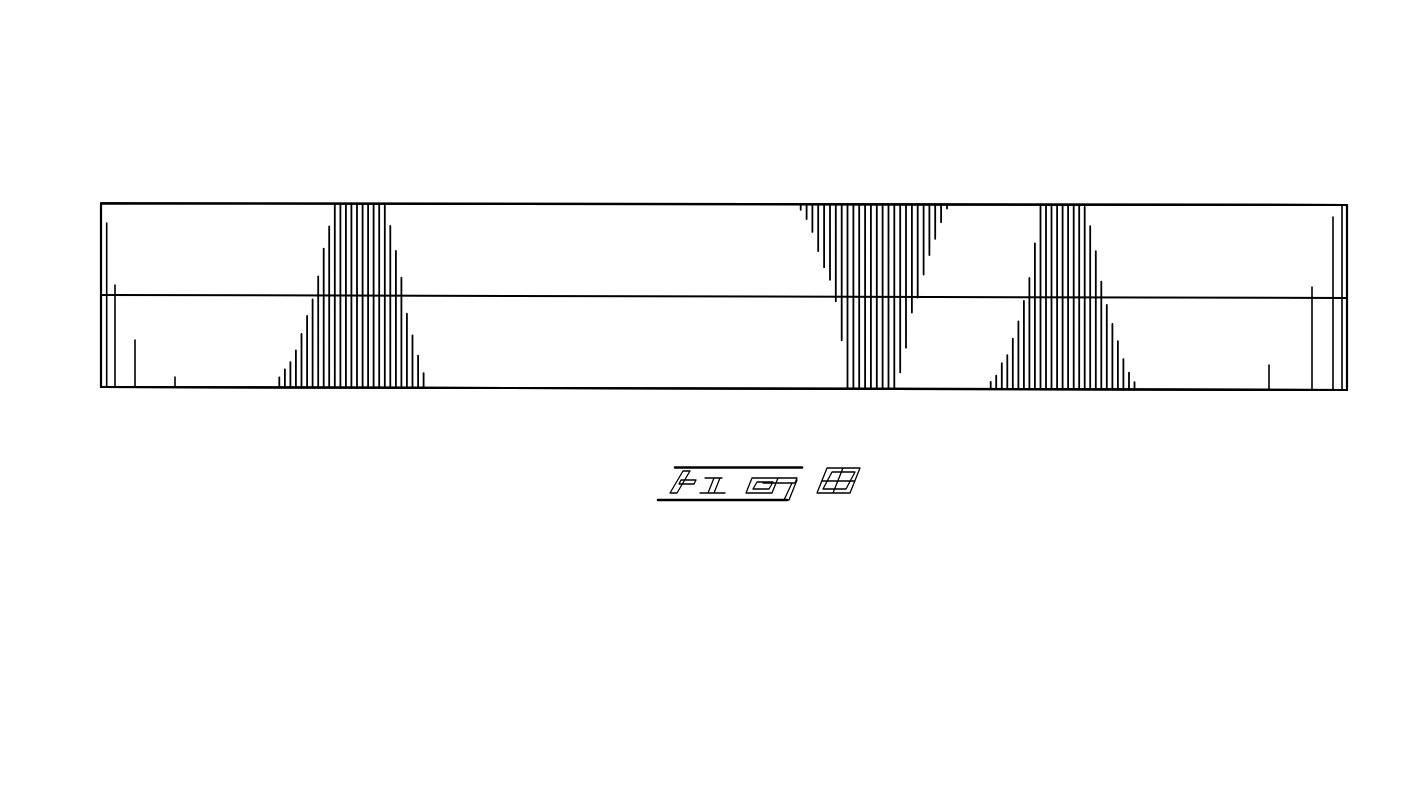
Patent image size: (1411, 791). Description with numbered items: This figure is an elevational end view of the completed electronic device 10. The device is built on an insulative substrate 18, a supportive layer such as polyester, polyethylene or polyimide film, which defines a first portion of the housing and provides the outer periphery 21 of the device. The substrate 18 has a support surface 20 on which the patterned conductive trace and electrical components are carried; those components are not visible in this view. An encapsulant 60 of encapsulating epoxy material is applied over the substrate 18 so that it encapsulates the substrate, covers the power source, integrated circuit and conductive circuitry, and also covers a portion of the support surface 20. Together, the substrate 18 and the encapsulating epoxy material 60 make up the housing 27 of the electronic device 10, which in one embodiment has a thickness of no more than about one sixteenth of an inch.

The electronic device 10 is at (988, 80).
The encapsulant 60 is at (698, 252).
The support surface 20 is at (1243, 300).
The substrate 18 is at (500, 342).
The outer periphery 21 is at (101, 346).
The housing 27 is at (1369, 358).